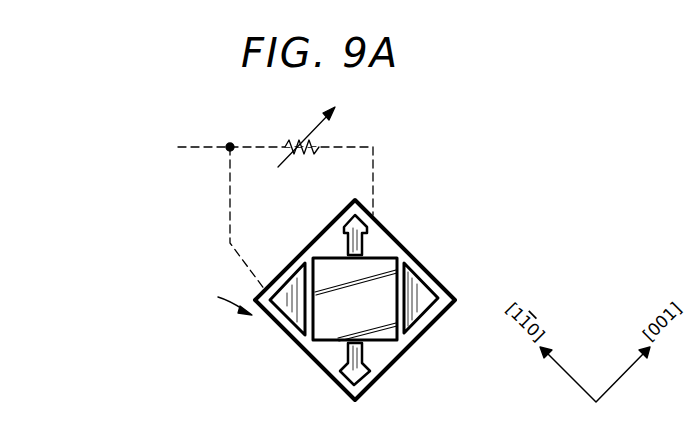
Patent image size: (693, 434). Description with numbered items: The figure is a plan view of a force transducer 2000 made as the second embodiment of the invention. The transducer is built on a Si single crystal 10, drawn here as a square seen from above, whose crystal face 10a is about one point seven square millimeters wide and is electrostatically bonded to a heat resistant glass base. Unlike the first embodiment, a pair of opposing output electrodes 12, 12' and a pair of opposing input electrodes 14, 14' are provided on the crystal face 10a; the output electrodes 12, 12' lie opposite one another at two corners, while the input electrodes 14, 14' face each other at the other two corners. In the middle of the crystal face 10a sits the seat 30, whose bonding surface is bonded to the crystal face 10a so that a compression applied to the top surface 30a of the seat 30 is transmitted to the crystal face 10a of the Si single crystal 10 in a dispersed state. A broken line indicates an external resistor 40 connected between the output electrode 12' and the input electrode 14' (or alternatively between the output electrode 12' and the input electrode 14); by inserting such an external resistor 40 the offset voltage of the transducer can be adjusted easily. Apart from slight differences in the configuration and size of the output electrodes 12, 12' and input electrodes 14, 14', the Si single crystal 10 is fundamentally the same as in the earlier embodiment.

The Si single crystal 10 is at (429, 326).
The crystal face 10a is at (328, 243).
The output electrode 12 is at (377, 376).
The output electrode 12' is at (342, 211).
The input electrode 14 is at (441, 290).
The input electrode 14' is at (272, 281).
The seat 30 is at (313, 340).
The top surface of the seat 30a is at (380, 267).
The external resistor 40 is at (283, 143).
The force transducer 2000 is at (206, 294).